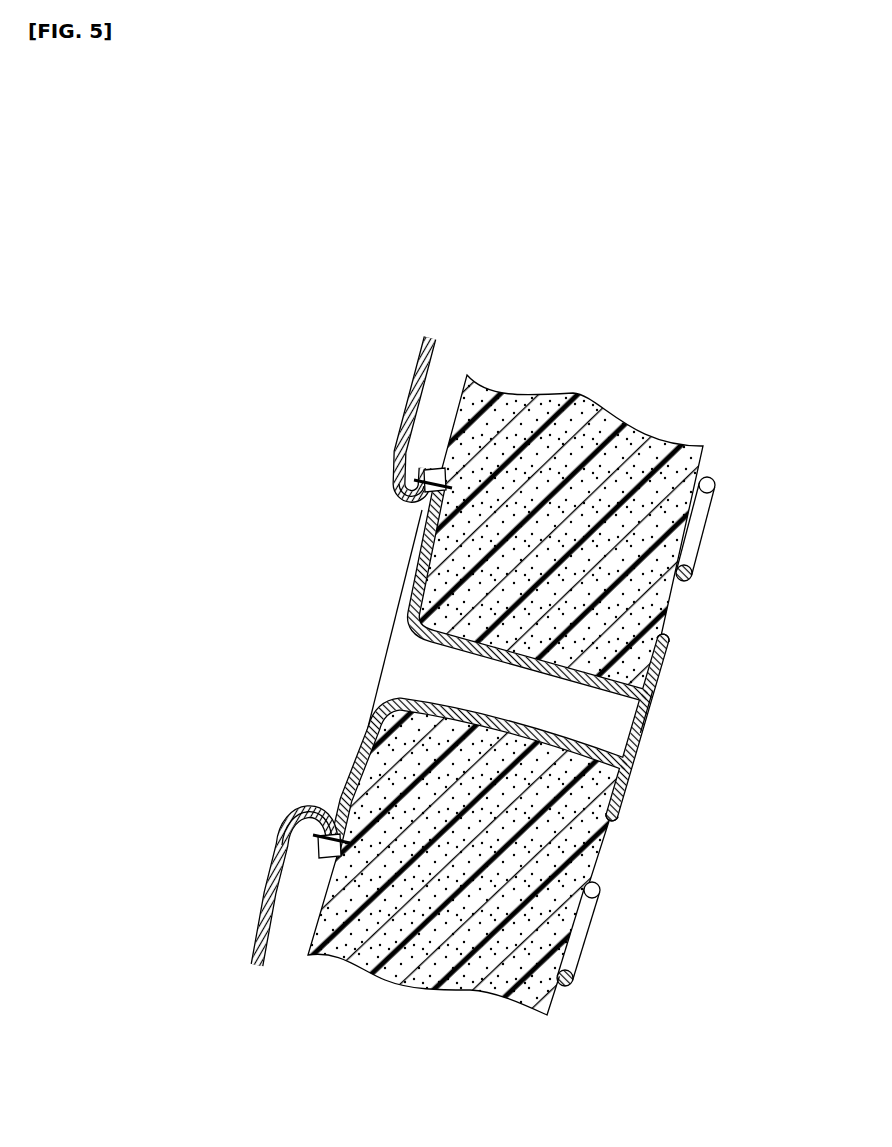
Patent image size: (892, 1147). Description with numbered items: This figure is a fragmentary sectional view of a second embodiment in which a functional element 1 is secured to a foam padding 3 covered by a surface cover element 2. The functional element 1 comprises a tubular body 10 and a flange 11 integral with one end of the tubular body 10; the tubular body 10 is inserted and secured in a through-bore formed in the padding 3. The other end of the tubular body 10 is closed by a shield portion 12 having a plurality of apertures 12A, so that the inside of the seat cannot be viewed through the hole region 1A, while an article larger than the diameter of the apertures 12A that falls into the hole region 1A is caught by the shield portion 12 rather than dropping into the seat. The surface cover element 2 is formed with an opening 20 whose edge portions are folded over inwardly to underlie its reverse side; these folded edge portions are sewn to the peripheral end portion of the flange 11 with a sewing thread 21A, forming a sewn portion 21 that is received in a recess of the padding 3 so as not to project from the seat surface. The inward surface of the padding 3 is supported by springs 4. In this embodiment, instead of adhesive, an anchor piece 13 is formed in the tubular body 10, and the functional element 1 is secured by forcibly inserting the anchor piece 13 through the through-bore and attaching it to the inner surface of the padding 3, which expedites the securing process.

The functional element 1 is at (462, 680).
The hole region 1A is at (414, 662).
The surface cover element 2 is at (287, 651).
The foam padding 3 is at (607, 417).
The springs 4 is at (705, 535).
The tubular body 10 is at (572, 684).
The flange 11 is at (356, 763).
The shield portion 12 is at (628, 761).
The apertures 12A is at (643, 735).
The anchor piece 13 is at (668, 653).
The opening 20 is at (410, 522).
The fastener 21 is at (428, 470).
The sewing thread 21A is at (412, 488).